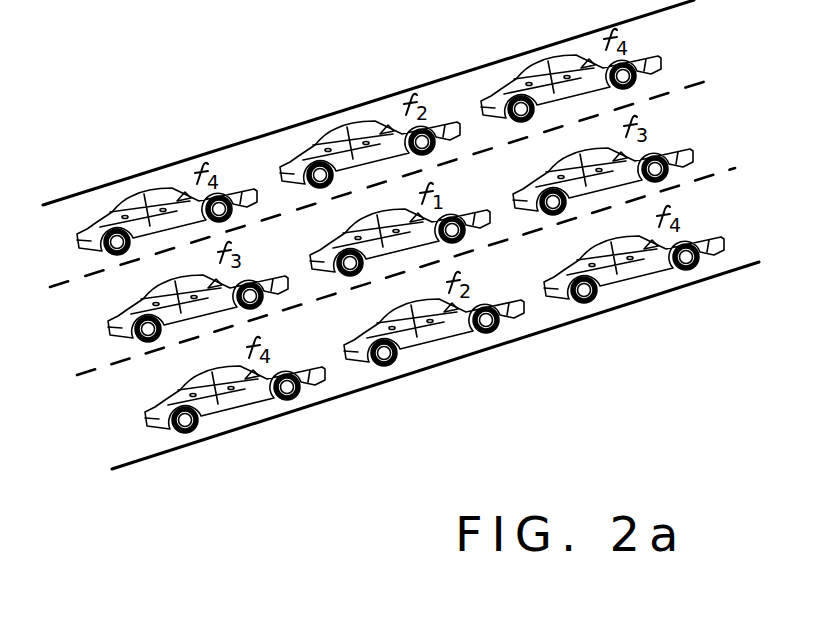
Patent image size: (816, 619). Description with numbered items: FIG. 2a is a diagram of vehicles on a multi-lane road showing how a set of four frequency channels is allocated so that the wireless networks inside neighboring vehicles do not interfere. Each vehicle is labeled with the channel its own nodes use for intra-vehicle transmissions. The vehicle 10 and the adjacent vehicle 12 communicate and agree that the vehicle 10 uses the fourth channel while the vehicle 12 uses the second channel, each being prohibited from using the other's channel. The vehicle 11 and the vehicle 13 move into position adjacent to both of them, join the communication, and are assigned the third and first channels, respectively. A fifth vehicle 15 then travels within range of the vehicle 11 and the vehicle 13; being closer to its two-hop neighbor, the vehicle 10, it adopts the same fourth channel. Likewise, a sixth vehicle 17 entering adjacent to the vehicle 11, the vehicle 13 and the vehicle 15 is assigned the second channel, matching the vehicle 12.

The vehicle 10 is at (241, 392).
The vehicle 11 is at (125, 319).
The vehicle 12 is at (440, 322).
The vehicle 13 is at (379, 241).
The vehicle 15 is at (162, 200).
The vehicle 17 is at (362, 134).